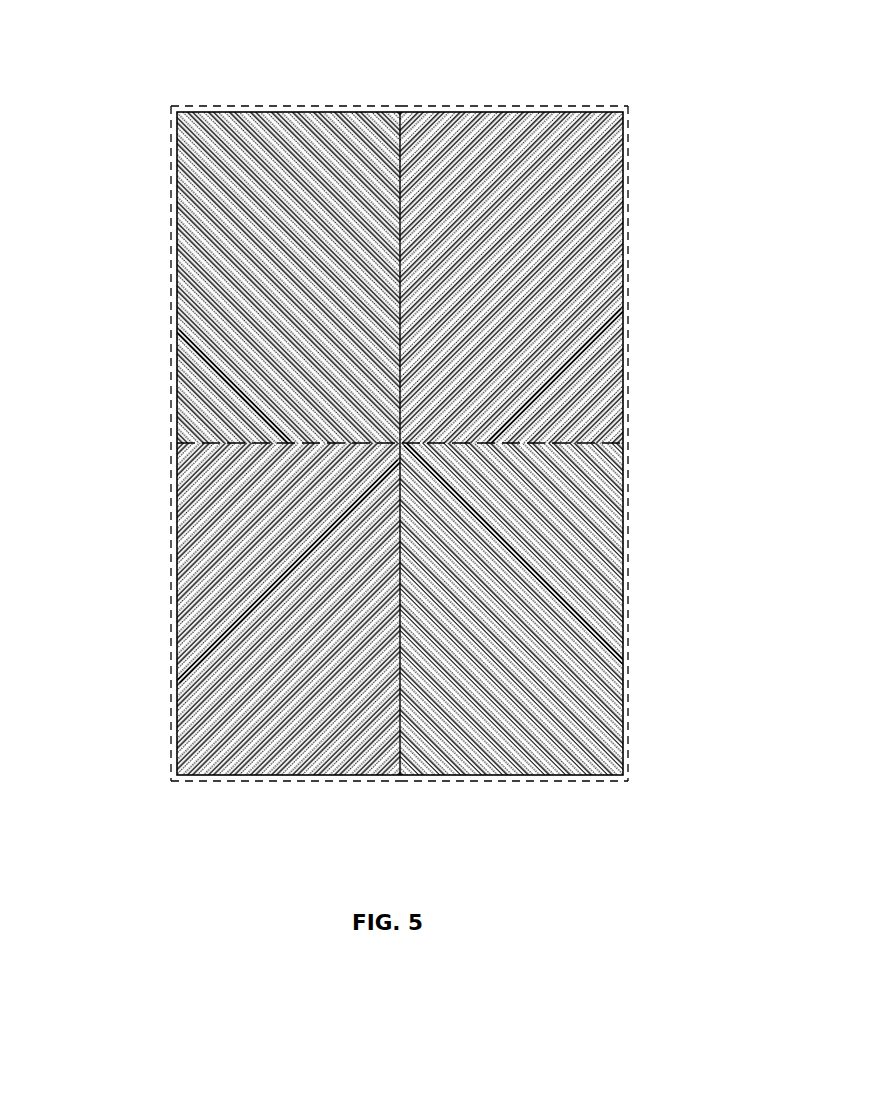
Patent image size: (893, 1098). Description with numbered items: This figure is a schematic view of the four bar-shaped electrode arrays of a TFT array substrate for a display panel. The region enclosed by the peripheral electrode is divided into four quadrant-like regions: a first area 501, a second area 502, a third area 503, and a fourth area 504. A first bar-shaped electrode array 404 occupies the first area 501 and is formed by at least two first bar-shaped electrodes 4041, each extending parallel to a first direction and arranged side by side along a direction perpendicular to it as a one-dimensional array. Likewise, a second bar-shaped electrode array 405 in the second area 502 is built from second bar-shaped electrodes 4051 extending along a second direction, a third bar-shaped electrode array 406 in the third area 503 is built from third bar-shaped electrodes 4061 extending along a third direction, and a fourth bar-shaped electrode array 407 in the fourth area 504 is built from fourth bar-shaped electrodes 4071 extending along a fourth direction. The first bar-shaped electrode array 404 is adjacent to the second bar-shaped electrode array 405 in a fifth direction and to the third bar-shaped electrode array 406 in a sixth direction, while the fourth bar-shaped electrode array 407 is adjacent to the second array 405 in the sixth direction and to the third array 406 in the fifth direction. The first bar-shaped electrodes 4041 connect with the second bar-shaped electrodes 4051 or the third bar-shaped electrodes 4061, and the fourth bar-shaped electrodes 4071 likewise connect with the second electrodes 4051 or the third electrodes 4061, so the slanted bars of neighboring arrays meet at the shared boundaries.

The first bar-shaped electrode array 404 is at (170, 285).
The first bar-shaped electrode 4041 is at (190, 337).
The second bar-shaped electrode array 405 is at (628, 272).
The second bar-shaped electrode 4051 is at (600, 336).
The third bar-shaped electrode array 406 is at (172, 622).
The third bar-shaped electrode 4061 is at (196, 668).
The fourth bar-shaped electrode array 407 is at (628, 620).
The fourth bar-shaped electrode 4071 is at (600, 650).
The first area 501 is at (283, 106).
The second area 502 is at (505, 106).
The third area 503 is at (313, 781).
The fourth area 504 is at (505, 781).